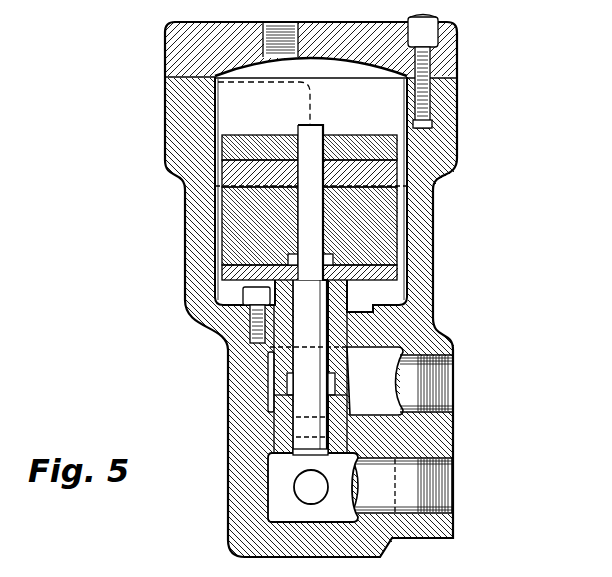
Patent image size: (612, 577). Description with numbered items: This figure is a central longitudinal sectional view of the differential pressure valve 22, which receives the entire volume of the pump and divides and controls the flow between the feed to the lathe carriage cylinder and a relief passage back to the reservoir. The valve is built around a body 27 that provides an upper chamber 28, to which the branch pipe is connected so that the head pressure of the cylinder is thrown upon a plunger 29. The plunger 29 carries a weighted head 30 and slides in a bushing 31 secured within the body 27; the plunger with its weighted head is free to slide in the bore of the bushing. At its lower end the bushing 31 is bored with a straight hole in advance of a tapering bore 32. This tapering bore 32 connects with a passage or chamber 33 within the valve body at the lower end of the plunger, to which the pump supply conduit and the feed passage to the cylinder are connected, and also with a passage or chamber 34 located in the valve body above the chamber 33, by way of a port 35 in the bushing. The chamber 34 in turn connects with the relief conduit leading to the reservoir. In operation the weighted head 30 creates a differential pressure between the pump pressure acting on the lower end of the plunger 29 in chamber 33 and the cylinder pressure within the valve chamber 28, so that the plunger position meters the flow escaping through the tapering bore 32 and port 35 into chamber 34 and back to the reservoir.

The differential pressure valve 22 is at (463, 142).
The body 27 is at (177, 117).
The chamber 28 is at (311, 189).
The plunger 29 is at (317, 163).
The weighted head 30 is at (238, 142).
The bushing 31 is at (343, 408).
The tapering bore 32 is at (282, 406).
The passage or chamber 33 is at (280, 473).
The passage or chamber 34 is at (390, 353).
The port 35 is at (340, 379).